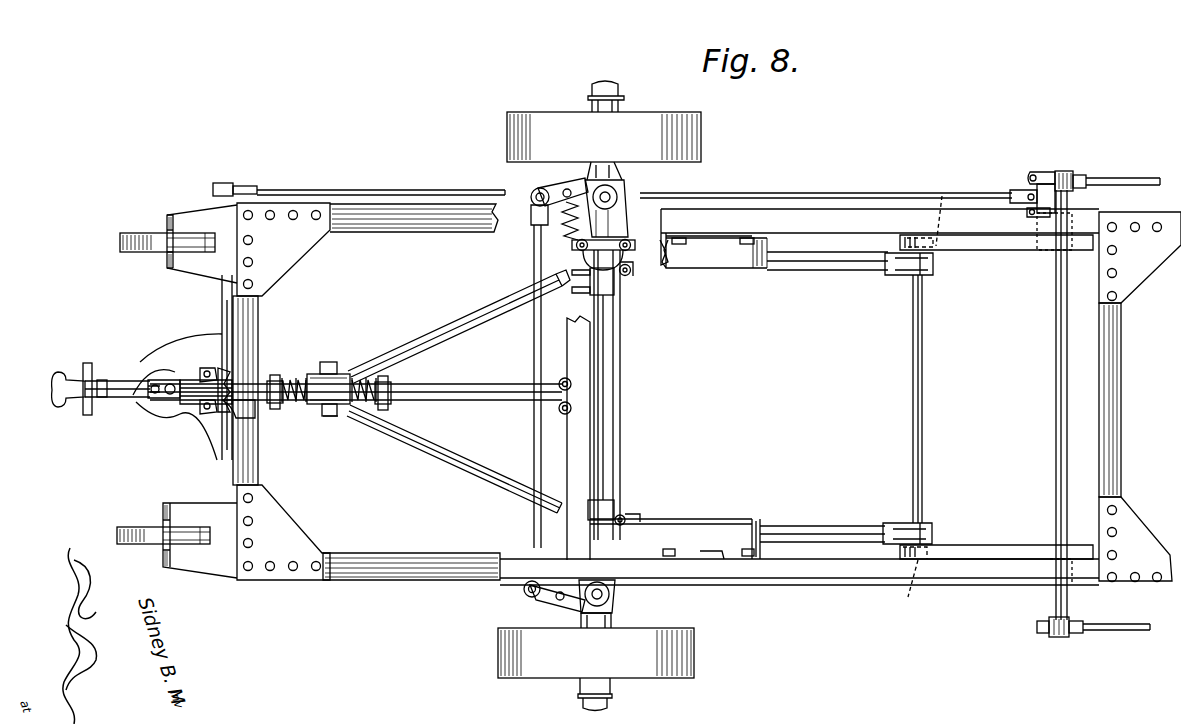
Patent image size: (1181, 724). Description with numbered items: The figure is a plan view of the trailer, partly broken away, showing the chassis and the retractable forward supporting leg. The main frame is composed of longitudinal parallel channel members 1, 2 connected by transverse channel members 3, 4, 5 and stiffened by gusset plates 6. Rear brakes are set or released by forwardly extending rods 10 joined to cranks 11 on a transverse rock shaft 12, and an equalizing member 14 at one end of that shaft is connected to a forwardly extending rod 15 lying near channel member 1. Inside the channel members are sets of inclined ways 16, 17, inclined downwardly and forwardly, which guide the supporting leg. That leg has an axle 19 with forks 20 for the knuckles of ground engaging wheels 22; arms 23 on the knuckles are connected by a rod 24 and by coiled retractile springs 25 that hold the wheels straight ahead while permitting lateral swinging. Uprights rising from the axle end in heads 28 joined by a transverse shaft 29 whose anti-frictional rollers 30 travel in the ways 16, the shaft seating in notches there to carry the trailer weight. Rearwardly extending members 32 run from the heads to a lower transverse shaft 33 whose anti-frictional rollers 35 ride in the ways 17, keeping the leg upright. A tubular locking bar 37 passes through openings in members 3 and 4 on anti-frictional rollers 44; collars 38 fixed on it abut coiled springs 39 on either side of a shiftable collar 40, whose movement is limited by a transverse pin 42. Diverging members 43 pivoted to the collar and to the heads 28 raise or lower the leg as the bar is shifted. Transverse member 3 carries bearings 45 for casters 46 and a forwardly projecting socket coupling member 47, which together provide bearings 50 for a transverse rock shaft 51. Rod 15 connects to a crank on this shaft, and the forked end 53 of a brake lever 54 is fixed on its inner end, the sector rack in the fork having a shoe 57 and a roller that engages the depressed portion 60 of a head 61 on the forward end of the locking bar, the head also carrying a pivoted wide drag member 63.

The longitudinal channel member 1 is at (822, 209).
The longitudinal channel member 2 is at (822, 580).
The transverse channel member 3 is at (258, 313).
The transverse channel member 4 is at (600, 342).
The transverse channel member 5 is at (1120, 365).
The gusset plate 6 is at (288, 259).
The forwardly extending rod 10 is at (1118, 179).
The crank 11 is at (1058, 172).
The transverse rock shaft 12 is at (1060, 382).
The equalizing member 14 is at (1022, 190).
The forwardly extending rod 15 is at (390, 190).
The inclined way 16 is at (740, 255).
The inclined way 17 is at (999, 250).
The axle 19 is at (614, 413).
The fork 20 is at (624, 198).
The ground engaging wheel 22 is at (672, 118).
The arm 23 is at (566, 186).
The rod 24 is at (534, 358).
The coiled retractile spring 25 is at (565, 234).
The head 28 is at (617, 284).
The transverse shaft 29 is at (604, 365).
The anti-frictional roller 30 is at (623, 242).
The rearwardly extending member 32 is at (840, 262).
The transverse shaft 33 is at (921, 410).
The anti-frictional roller 35 is at (946, 168).
The tubular locking bar 37 is at (470, 390).
The collar 38 is at (275, 376).
The coiled spring 39 is at (294, 404).
The shiftable collar 40 is at (337, 372).
The transverse pin 42 is at (330, 416).
The diverging member 43 is at (448, 326).
The anti-frictional roller 44 is at (562, 378).
The bearing 45 is at (184, 216).
The caster 46 is at (130, 234).
The socket coupling member 47 is at (160, 360).
The bearing 50 is at (245, 410).
The transverse rock shaft 51 is at (224, 305).
The forked end 53 is at (224, 412).
The brake lever 54 is at (154, 398).
The shoe 57 is at (171, 398).
The depressed portion 60 is at (55, 398).
The head 61 is at (102, 380).
The drag member 63 is at (87, 415).